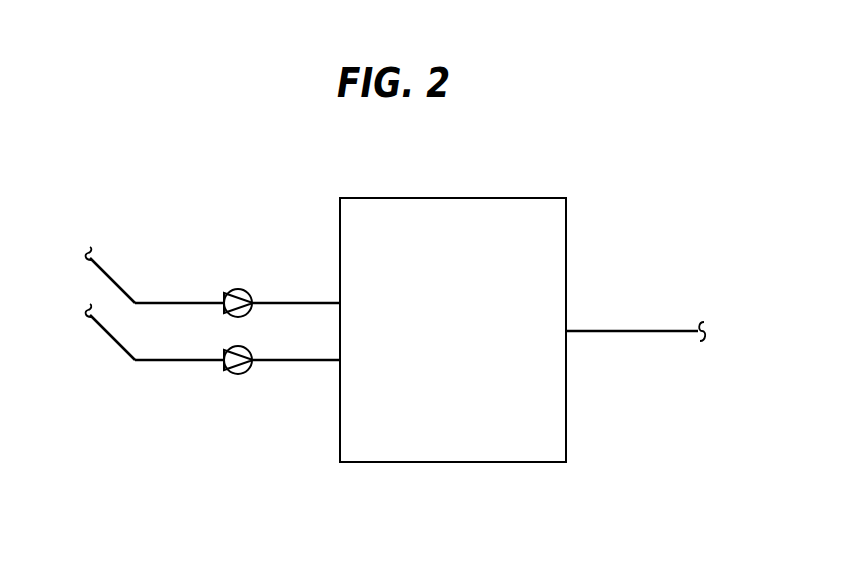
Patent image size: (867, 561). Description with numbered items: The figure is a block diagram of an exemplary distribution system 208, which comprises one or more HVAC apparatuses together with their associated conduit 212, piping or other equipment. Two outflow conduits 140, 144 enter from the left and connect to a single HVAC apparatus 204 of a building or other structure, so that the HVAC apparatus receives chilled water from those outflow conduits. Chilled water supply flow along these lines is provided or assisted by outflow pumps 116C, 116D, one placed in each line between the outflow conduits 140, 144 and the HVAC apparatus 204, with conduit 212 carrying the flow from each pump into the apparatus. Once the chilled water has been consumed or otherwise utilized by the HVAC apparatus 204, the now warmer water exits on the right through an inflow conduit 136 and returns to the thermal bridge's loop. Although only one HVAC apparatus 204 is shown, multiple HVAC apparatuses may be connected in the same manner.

The distribution system 208 is at (563, 155).
The HVAC apparatus 204 is at (473, 341).
The inflow conduit 136 is at (590, 331).
The outflow conduit 144 is at (115, 280).
The outflow conduit 140 is at (119, 343).
The conduit 212 is at (327, 306).
The outflow pump 116C is at (240, 289).
The outflow pump 116D is at (240, 374).